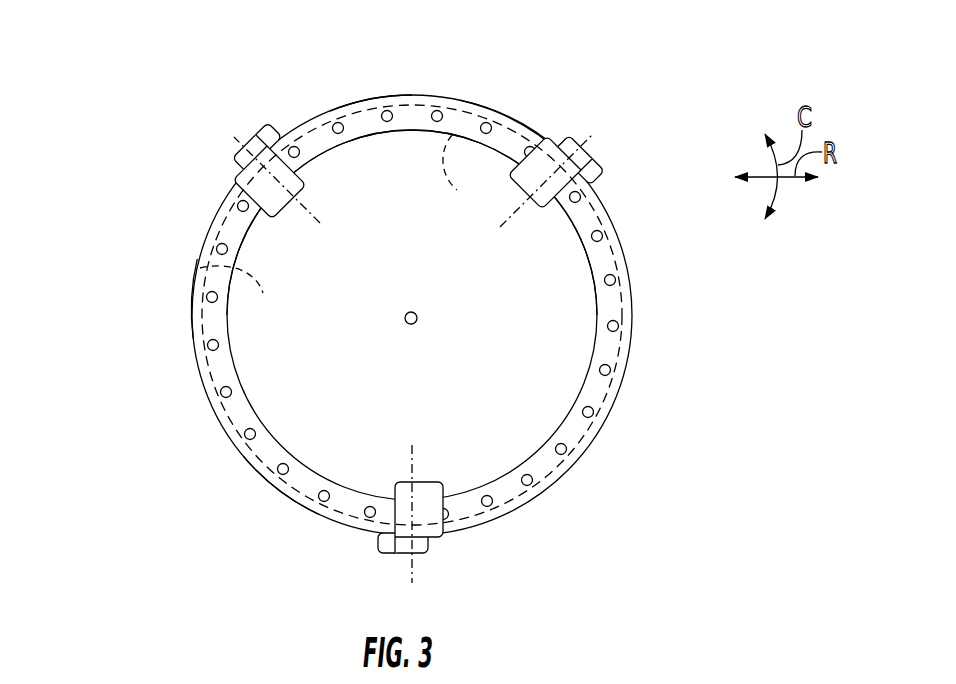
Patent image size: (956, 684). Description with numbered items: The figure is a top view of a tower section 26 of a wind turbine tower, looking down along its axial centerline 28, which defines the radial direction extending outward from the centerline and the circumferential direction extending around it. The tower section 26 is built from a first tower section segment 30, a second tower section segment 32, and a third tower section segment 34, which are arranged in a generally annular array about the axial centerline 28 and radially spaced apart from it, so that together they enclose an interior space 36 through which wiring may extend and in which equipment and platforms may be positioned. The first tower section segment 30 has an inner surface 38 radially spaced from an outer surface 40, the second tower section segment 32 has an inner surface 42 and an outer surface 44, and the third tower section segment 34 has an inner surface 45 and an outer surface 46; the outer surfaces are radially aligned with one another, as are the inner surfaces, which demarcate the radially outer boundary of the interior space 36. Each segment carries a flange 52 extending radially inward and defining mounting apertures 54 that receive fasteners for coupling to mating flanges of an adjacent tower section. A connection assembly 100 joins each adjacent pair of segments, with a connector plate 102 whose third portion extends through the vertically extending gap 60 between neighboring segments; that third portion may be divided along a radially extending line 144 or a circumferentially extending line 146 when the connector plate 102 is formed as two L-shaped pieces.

The tower section 26 is at (389, 307).
The axial centerline 28 is at (418, 318).
The first tower section segment 30 is at (434, 299).
The second tower section segment 32 is at (262, 504).
The third tower section segment 34 is at (513, 113).
The interior space 36 is at (398, 217).
The inner surface 38 is at (548, 428).
The outer surface 40 is at (587, 455).
The inner surface 42 is at (239, 297).
The outer surface 44 is at (192, 338).
The inner surface 45 is at (462, 173).
The outer surface 46 is at (360, 95).
The flange 52 is at (317, 138).
The mounting aperture 54 is at (437, 111).
The vertically extending gap 60 is at (542, 205).
The connection assembly 100 is at (468, 319).
The connector plate 102 is at (248, 140).
The radially extending line 144 is at (588, 147).
The circumferentially extending line 146 is at (565, 143).